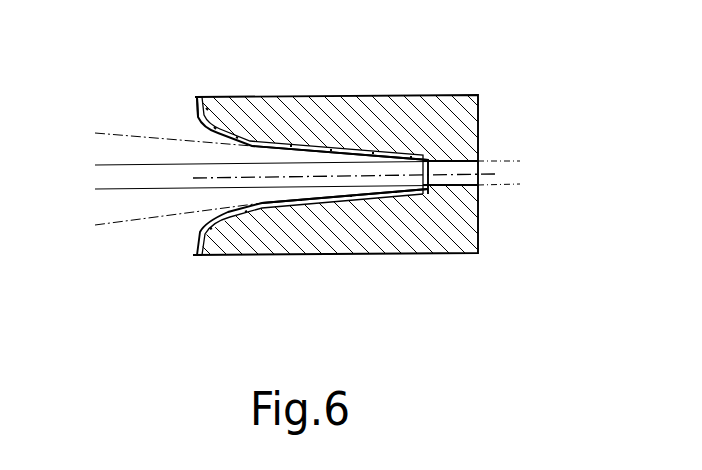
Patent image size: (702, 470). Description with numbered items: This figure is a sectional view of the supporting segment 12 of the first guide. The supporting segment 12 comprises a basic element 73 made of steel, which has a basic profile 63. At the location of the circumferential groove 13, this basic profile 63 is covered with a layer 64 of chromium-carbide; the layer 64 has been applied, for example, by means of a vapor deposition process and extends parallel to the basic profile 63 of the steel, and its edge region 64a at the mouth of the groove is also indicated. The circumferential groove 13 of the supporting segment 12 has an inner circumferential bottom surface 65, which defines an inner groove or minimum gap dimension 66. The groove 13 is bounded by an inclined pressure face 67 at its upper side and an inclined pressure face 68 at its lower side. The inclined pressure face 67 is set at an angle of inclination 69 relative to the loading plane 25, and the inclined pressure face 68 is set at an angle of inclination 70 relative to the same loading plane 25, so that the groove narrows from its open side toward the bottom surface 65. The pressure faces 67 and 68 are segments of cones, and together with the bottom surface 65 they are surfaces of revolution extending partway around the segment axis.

The supporting segment 12 is at (491, 52).
The circumferential groove 13 is at (170, 184).
The loading plane 25 is at (225, 178).
The basic profile 63 is at (213, 97).
The layer of chromium-carbide 64 is at (199, 96).
The lip edge 64a is at (197, 112).
The inner circumferential bottom surface 65 is at (426, 182).
The minimum gap dimension 66 is at (503, 208).
The inclined pressure face 67 is at (314, 157).
The inclined pressure face 68 is at (257, 205).
The angle of inclination 69 is at (108, 164).
The angle of inclination 70 is at (108, 190).
The basic element 73 is at (462, 119).